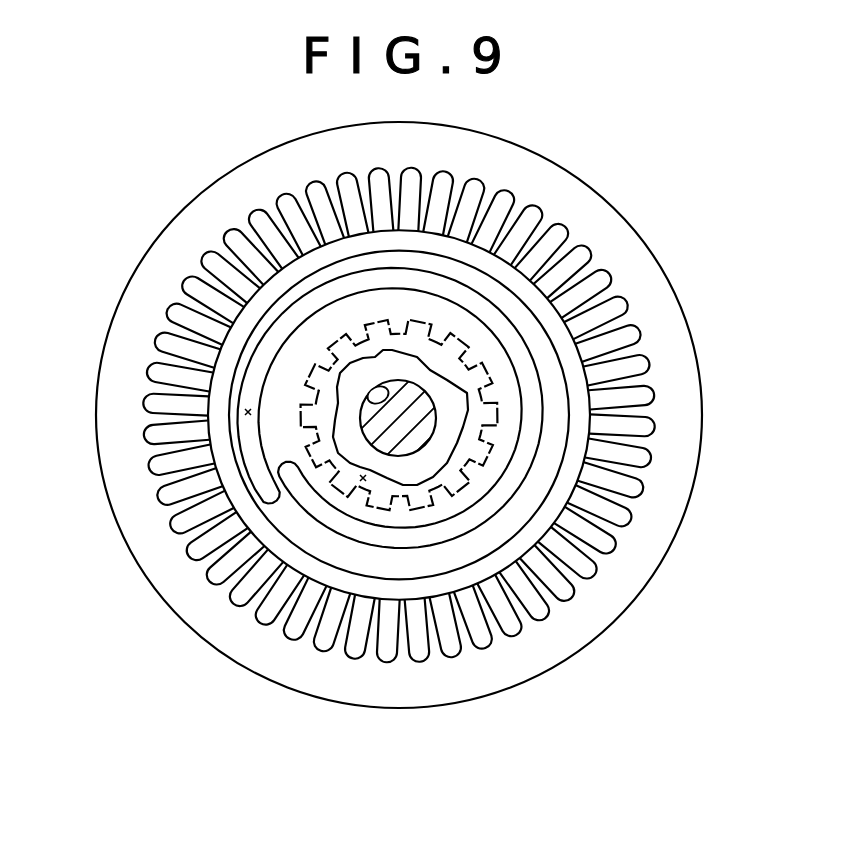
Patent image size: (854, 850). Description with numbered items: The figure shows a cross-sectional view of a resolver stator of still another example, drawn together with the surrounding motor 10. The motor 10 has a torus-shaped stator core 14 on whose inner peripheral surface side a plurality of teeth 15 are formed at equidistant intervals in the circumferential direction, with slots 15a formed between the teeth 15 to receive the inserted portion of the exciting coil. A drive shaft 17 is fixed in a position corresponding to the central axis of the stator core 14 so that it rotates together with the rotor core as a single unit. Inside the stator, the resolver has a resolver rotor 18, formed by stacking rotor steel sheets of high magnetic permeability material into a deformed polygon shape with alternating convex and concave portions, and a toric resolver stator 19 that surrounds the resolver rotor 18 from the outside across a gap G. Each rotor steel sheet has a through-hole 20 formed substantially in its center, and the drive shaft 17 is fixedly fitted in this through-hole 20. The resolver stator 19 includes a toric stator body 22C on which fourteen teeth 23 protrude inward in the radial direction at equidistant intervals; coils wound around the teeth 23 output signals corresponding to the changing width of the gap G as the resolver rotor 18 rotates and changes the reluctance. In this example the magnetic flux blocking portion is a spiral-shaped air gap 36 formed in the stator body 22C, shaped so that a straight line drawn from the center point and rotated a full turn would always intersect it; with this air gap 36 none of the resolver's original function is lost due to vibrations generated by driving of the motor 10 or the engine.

The motor 10 is at (668, 316).
The stator core 14 is at (687, 355).
The teeth 15 is at (626, 388).
The slots 15a is at (629, 457).
The drive shaft 17 is at (428, 398).
The resolver rotor 18 is at (403, 365).
The resolver stator 19 is at (622, 548).
The through-hole 20 is at (382, 388).
The stator body 22C is at (495, 538).
The teeth 23 is at (322, 357).
The spiral-shaped air gap 36 is at (244, 412).
The gap G is at (361, 483).